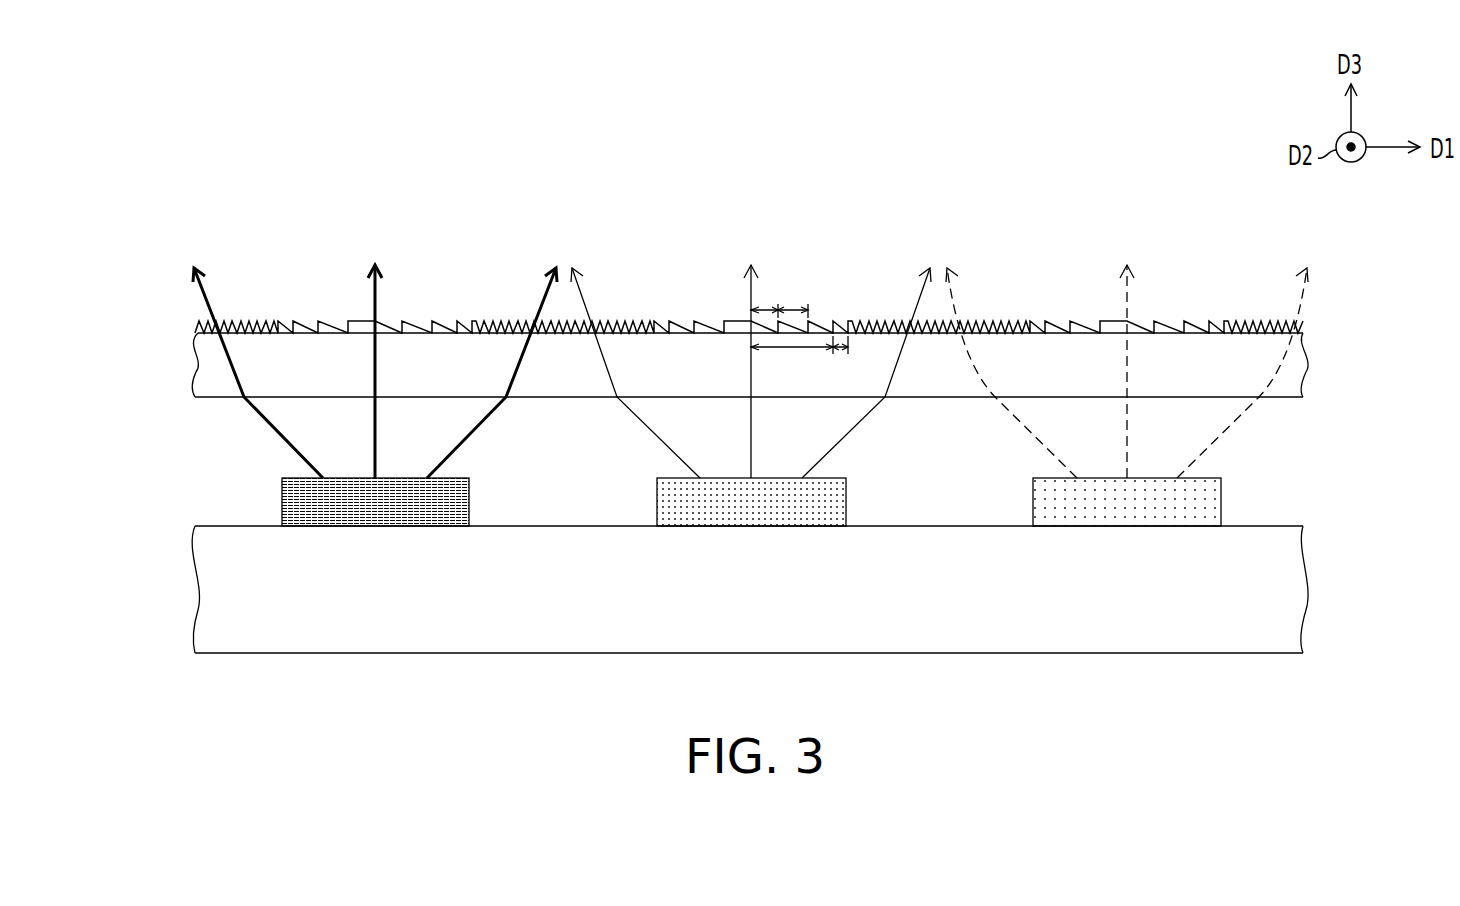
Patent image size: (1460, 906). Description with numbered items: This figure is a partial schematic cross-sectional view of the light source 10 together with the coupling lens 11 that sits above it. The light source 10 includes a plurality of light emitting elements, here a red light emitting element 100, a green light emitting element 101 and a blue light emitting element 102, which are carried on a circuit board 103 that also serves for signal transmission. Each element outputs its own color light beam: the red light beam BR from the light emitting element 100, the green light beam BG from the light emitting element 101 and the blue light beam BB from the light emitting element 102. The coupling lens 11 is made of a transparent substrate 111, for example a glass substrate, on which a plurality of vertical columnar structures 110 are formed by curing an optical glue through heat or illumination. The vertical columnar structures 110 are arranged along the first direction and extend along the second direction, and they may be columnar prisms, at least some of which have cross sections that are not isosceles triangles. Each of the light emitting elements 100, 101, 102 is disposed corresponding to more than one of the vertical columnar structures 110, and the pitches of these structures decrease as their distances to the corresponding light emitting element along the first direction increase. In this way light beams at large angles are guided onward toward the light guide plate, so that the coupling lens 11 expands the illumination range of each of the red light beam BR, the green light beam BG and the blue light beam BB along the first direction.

The light source 10 is at (122, 478).
The coupling lens 11 is at (123, 322).
The light emitting element 100 is at (290, 503).
The light emitting element 101 is at (665, 503).
The light emitting element 102 is at (1040, 503).
The circuit board 103 is at (210, 593).
The vertical columnar structures 110 is at (1310, 327).
The transparent substrate 111 is at (212, 367).
The red light beam BR is at (283, 440).
The green light beam BG is at (658, 440).
The blue light beam BB is at (1035, 440).